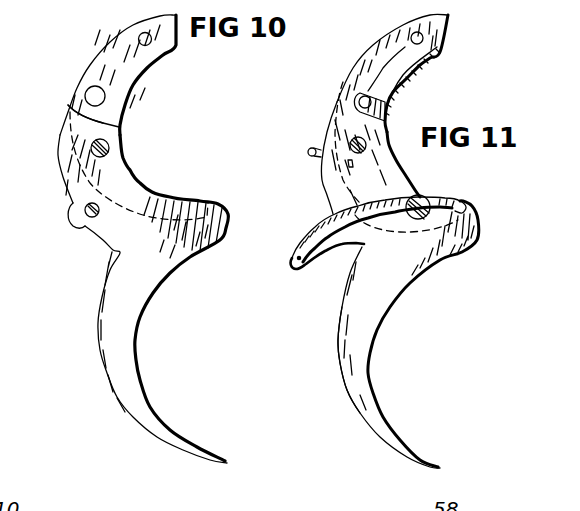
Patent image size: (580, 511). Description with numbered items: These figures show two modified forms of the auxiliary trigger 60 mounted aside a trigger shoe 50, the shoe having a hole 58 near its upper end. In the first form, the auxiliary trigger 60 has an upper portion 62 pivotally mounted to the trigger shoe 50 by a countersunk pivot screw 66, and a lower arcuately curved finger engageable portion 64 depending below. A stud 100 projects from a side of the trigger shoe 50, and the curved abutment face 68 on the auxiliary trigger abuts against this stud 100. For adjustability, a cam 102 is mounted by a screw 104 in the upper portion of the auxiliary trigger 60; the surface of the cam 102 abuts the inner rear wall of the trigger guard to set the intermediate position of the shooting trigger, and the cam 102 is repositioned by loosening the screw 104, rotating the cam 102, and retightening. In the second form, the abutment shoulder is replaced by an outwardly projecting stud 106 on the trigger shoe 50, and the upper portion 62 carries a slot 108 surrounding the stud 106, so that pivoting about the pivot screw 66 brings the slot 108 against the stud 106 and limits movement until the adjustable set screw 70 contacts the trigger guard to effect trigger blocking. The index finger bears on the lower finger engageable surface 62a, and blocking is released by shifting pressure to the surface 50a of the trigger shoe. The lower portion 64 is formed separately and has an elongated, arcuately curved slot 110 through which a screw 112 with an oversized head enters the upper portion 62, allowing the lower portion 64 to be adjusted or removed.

In FIG. 10, the trigger shoe 50 is at (153, 82).
In FIG. 11, the trigger shoe 50 is at (435, 63).
In FIG. 11, the surface of the trigger shoe 50a is at (413, 72).
In FIG. 10, the pivot hole 58 is at (151, 41).
In FIG. 11, the pivot hole 58 is at (423, 39).
In FIG. 10, the auxiliary trigger 60 is at (145, 355).
In FIG. 11, the auxiliary trigger 60 is at (383, 327).
In FIG. 11, the upper portion 62 is at (330, 123).
In FIG. 11, the lower finger engageable surface 62a is at (413, 180).
In FIG. 11, the lower portion 64 is at (358, 408).
In FIG. 10, the pivot screw 66 is at (109, 148).
In FIG. 11, the pivot screw 66 is at (360, 153).
In FIG. 10, the curved abutment face 68 is at (90, 108).
In FIG. 11, the adjustable set screw 70 is at (313, 158).
In FIG. 10, the stud 100 is at (84, 95).
In FIG. 10, the cam 102 is at (70, 216).
In FIG. 10, the screw 104 is at (99, 215).
In FIG. 11, the outwardly projecting stud 106 is at (381, 107).
In FIG. 11, the slot 108 is at (358, 97).
In FIG. 11, the elongated arcuately curved slot 110 is at (299, 258).
In FIG. 11, the screw 112 is at (445, 201).